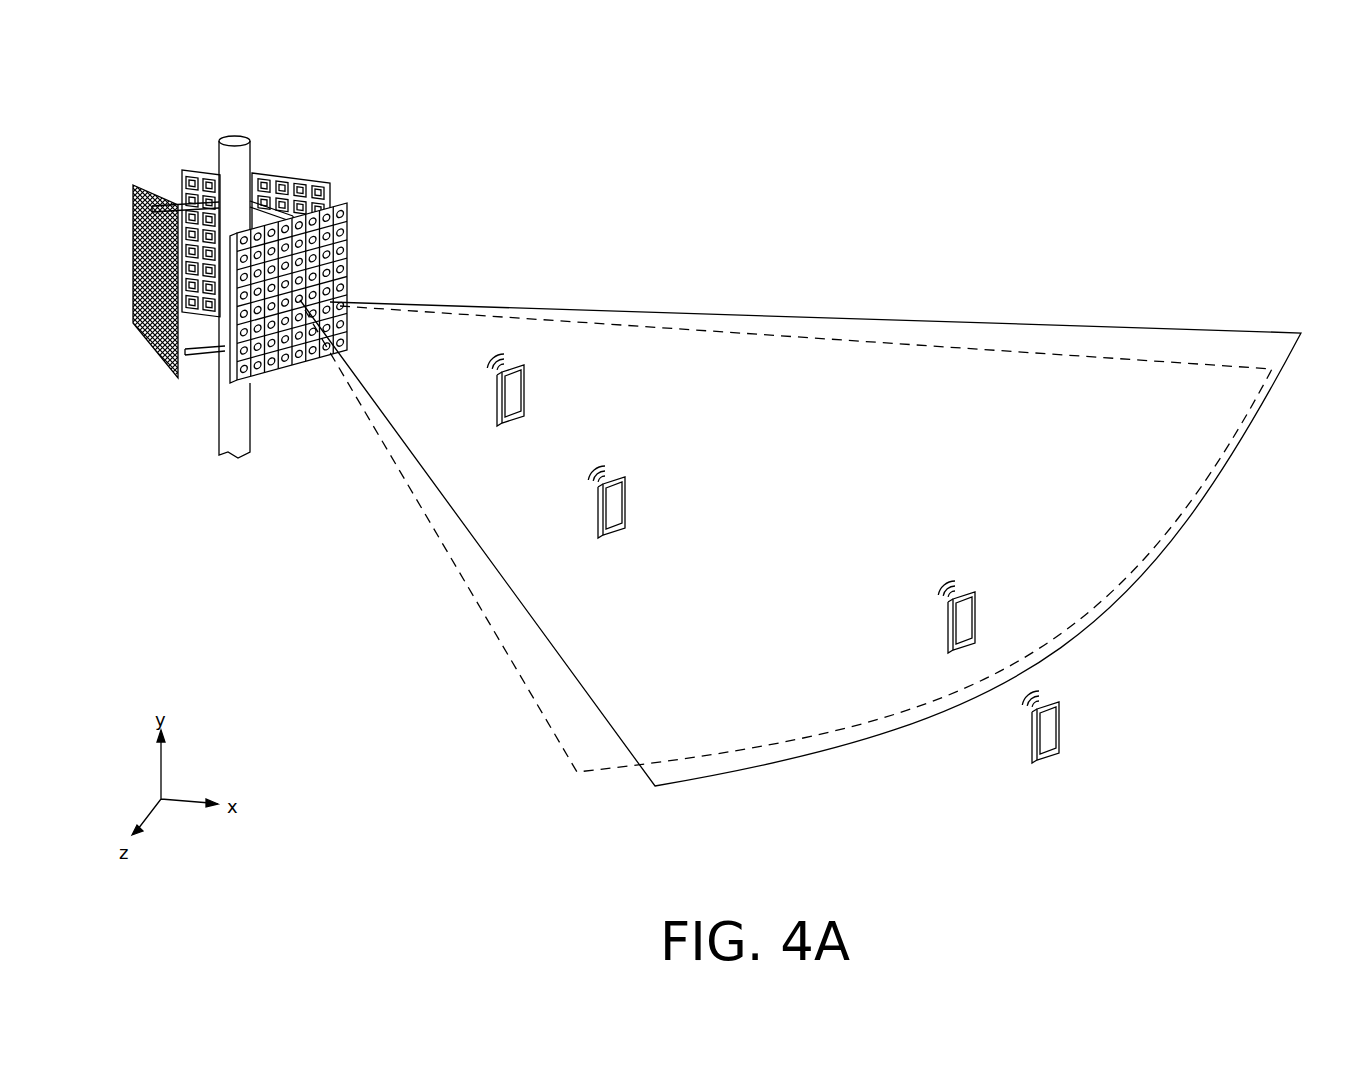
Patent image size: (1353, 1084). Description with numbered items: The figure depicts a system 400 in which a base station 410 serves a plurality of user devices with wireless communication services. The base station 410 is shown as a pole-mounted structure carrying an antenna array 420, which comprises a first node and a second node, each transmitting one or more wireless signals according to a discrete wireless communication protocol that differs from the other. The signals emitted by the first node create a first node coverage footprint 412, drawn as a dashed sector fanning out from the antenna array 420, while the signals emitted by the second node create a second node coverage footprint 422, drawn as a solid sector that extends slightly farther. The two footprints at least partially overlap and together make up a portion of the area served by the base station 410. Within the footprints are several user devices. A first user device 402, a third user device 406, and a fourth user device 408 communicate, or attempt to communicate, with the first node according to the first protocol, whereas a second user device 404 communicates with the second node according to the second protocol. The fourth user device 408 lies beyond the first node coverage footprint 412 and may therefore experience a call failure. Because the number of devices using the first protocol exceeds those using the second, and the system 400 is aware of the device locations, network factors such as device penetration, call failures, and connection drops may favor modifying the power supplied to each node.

The system 400 is at (148, 120).
The base station 410 is at (288, 148).
The antenna array 420 is at (305, 388).
The second node coverage footprint 422 is at (852, 318).
The first node coverage footprint 412 is at (462, 573).
The first user device 402 is at (527, 392).
The second user device 404 is at (628, 503).
The third user device 406 is at (947, 625).
The fourth user device 408 is at (1062, 722).